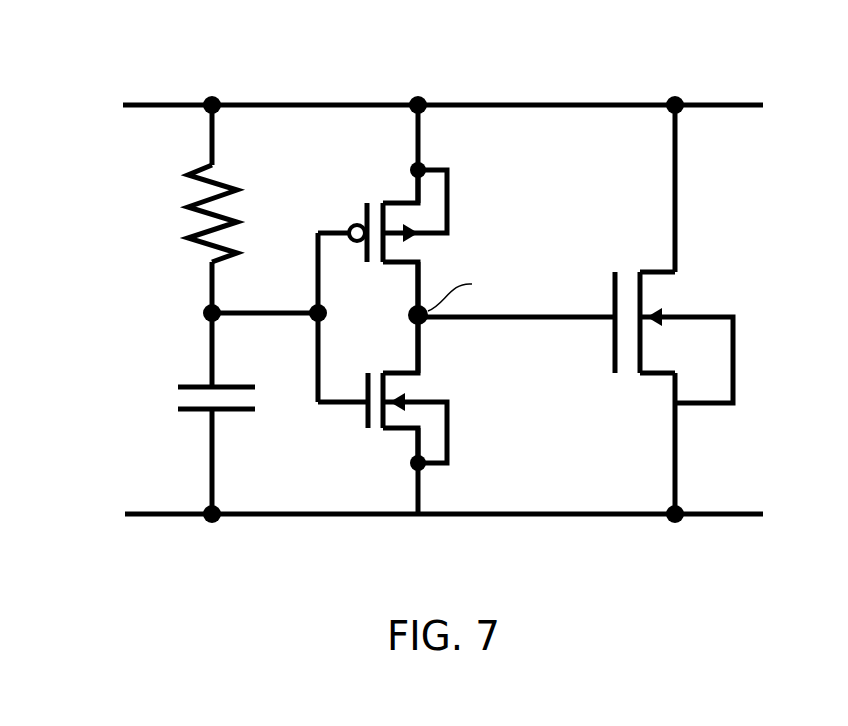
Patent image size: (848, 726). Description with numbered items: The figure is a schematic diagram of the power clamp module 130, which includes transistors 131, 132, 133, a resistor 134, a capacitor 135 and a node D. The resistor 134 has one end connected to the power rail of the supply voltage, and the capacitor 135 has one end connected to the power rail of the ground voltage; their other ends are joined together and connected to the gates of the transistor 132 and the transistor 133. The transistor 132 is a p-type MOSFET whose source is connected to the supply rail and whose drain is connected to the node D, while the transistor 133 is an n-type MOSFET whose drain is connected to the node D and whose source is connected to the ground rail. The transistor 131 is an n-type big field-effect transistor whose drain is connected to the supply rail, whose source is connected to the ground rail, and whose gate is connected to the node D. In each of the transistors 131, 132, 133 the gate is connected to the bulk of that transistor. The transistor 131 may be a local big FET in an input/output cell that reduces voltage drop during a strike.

The power clamp module 130 is at (80, 34).
The transistor 131 is at (623, 377).
The transistor 132 is at (355, 208).
The transistor 133 is at (360, 423).
The resistor 134 is at (177, 214).
The capacitor 135 is at (177, 399).